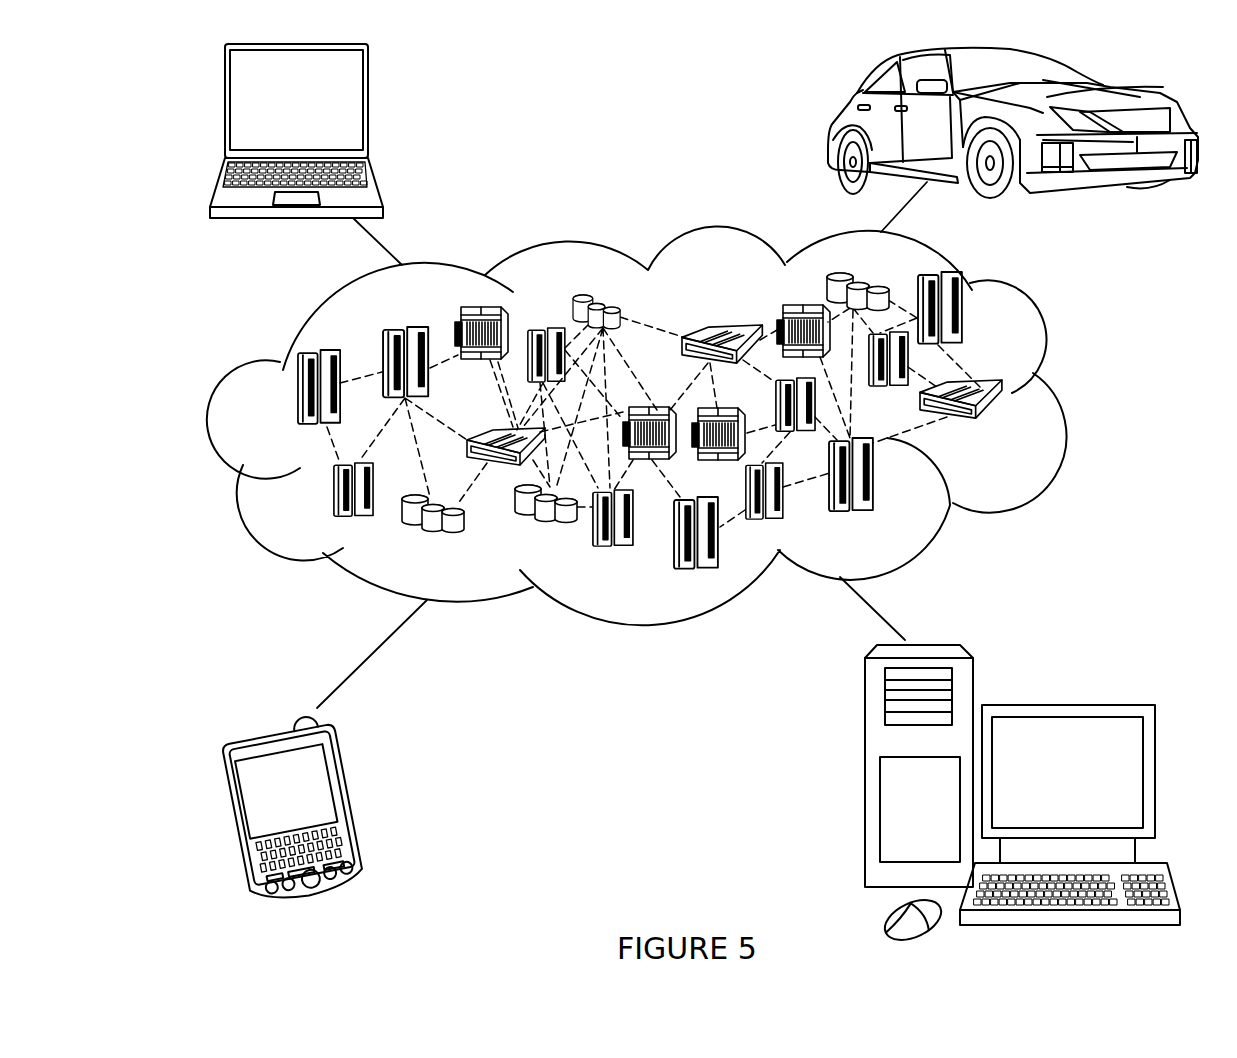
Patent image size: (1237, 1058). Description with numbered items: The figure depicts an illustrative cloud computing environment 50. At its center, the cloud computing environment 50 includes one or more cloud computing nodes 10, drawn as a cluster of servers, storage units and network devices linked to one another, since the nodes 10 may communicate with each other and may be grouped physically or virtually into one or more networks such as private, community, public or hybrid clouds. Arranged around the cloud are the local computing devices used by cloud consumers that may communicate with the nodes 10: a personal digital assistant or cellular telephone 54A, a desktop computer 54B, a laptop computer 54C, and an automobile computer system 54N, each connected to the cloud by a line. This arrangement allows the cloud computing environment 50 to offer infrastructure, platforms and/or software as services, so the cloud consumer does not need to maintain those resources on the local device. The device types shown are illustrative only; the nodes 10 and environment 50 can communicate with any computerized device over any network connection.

The cloud computing nodes 10 is at (1008, 433).
The cloud computing environment 50 is at (1063, 397).
The personal digital assistant (PDA) or cellular telephone 54A is at (362, 805).
The desktop computer 54B is at (1063, 705).
The laptop computer 54C is at (370, 108).
The automobile computer system 54N is at (835, 127).